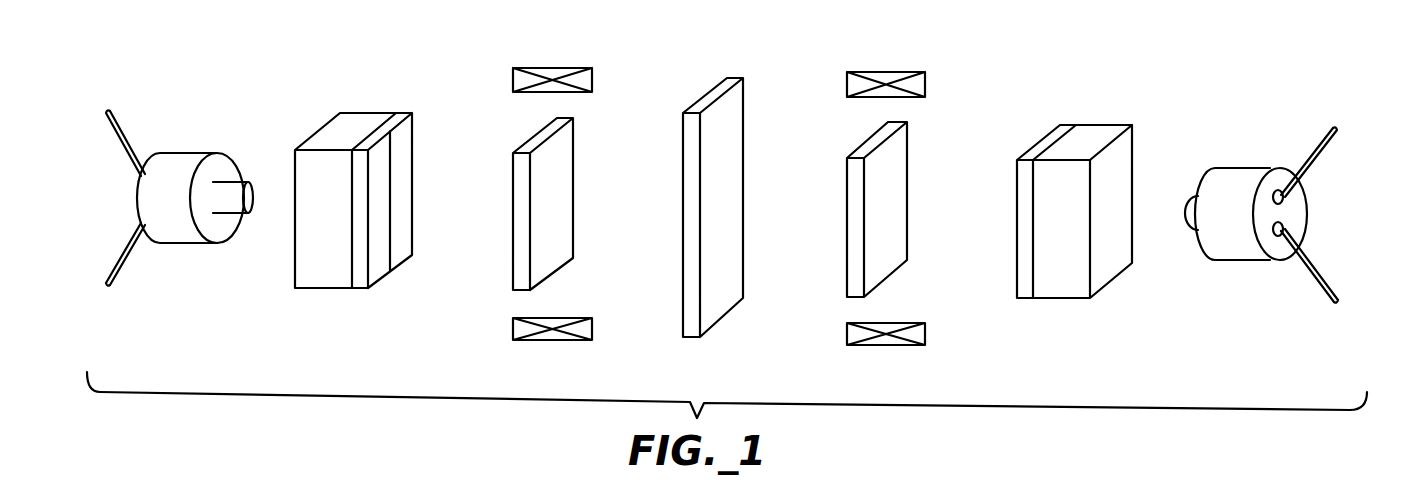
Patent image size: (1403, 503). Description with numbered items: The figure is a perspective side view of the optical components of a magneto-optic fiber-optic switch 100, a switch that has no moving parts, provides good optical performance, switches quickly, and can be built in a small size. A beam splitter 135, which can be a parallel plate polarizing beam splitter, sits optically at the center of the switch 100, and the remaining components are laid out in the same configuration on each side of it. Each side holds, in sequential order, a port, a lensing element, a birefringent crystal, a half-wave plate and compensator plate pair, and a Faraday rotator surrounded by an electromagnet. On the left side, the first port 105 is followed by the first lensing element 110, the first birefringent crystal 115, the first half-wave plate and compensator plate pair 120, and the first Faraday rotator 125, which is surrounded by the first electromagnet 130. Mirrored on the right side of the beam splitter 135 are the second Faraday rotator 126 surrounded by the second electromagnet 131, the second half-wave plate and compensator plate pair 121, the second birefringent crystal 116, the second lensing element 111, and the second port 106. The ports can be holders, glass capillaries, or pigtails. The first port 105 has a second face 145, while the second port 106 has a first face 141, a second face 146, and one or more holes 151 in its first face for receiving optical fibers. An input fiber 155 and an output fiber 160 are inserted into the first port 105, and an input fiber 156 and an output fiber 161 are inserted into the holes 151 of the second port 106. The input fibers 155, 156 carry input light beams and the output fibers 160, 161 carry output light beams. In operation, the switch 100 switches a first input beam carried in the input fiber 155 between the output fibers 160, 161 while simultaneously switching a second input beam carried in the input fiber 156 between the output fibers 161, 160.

The magneto-optic fiber-optic switch 100 is at (224, 80).
The first port 105 is at (181, 170).
The second port 106 is at (1252, 178).
The first lensing element 110 is at (230, 180).
The second lensing element 111 is at (1195, 235).
The first birefringent crystal 115 is at (304, 288).
The second birefringent crystal 116 is at (1071, 298).
The first half-wave plate and compensator plate pair 120 is at (356, 288).
The second half-wave plate and compensator plate pair 121 is at (1022, 298).
The first Faraday rotator 125 is at (510, 270).
The second Faraday rotator 126 is at (905, 185).
The first electromagnet 130 is at (548, 68).
The second electromagnet 131 is at (888, 72).
The beam splitter 135 is at (690, 337).
The first face of second port 141 is at (1300, 197).
The second face of first port 145 is at (215, 228).
The second face of second port 146 is at (1200, 192).
The holes 151 is at (1282, 190).
The input fiber 155 is at (131, 140).
The input fiber 156 is at (1325, 135).
The output fiber 160 is at (130, 255).
The output fiber 161 is at (1318, 275).